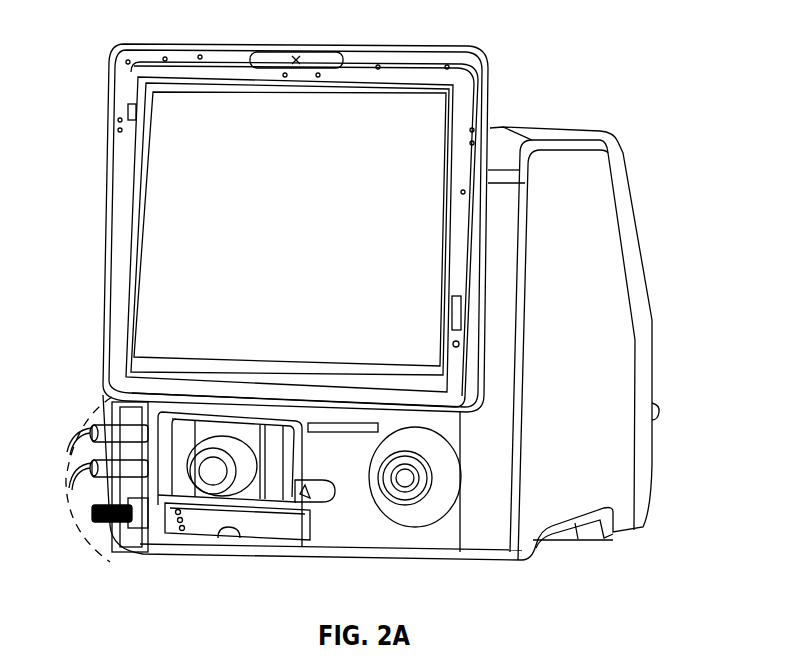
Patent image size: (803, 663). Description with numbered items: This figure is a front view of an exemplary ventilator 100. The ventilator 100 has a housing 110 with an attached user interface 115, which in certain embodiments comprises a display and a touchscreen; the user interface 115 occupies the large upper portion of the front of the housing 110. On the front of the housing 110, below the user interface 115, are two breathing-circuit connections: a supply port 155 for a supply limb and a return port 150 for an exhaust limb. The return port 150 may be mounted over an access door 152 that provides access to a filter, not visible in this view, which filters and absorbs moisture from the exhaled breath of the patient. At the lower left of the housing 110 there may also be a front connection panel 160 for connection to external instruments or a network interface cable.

The ventilator 100 is at (488, 47).
The housing 110 is at (602, 202).
The user interface 115 is at (165, 205).
The return port 150 is at (210, 490).
The access door 152 is at (277, 520).
The supply port 155 is at (405, 481).
The front connection panel 160 is at (110, 558).